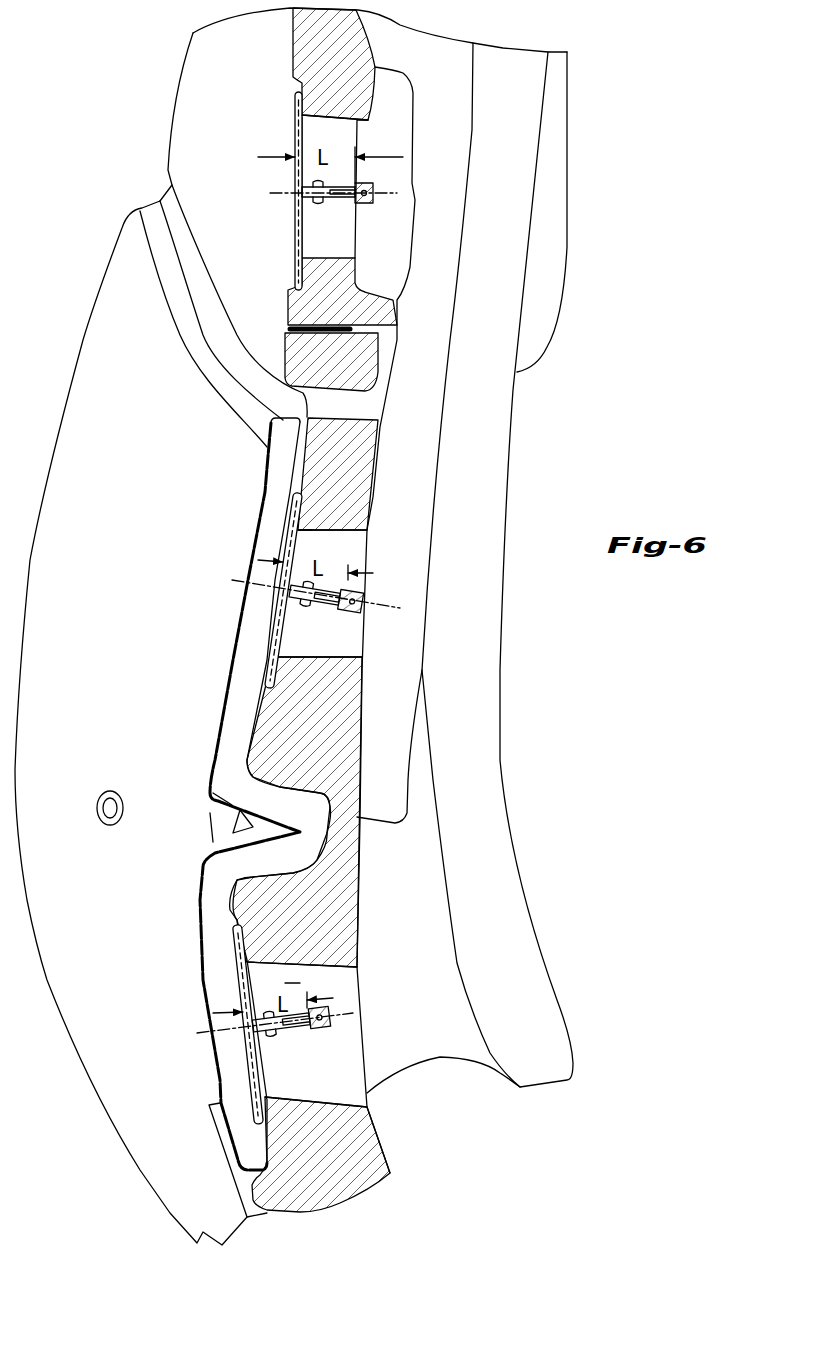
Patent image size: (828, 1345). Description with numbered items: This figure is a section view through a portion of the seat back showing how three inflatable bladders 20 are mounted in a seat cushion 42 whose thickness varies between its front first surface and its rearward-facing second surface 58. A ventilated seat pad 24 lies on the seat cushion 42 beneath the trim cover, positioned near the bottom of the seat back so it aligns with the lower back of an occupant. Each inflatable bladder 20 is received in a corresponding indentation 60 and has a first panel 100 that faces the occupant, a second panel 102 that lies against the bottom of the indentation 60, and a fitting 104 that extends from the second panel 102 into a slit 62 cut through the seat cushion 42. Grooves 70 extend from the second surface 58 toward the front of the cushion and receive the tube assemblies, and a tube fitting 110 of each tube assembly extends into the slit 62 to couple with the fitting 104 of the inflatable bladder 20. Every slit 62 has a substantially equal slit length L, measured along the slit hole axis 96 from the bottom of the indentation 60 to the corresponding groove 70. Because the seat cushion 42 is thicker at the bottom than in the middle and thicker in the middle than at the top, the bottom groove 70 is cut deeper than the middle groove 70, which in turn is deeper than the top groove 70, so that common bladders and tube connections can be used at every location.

The inflatable bladder 20 is at (295, 133).
The ventilated seat pad 24 is at (230, 658).
The seat cushion 42 is at (177, 90).
The second surface 58 is at (373, 497).
The indentation 60 is at (296, 233).
The slit 62 is at (358, 145).
The groove 70 is at (343, 588).
The slit hole axis 96 is at (277, 195).
The first panel 100 is at (296, 125).
The second panel 102 is at (308, 122).
The fitting 104 is at (316, 203).
The tube fitting 110 is at (362, 204).